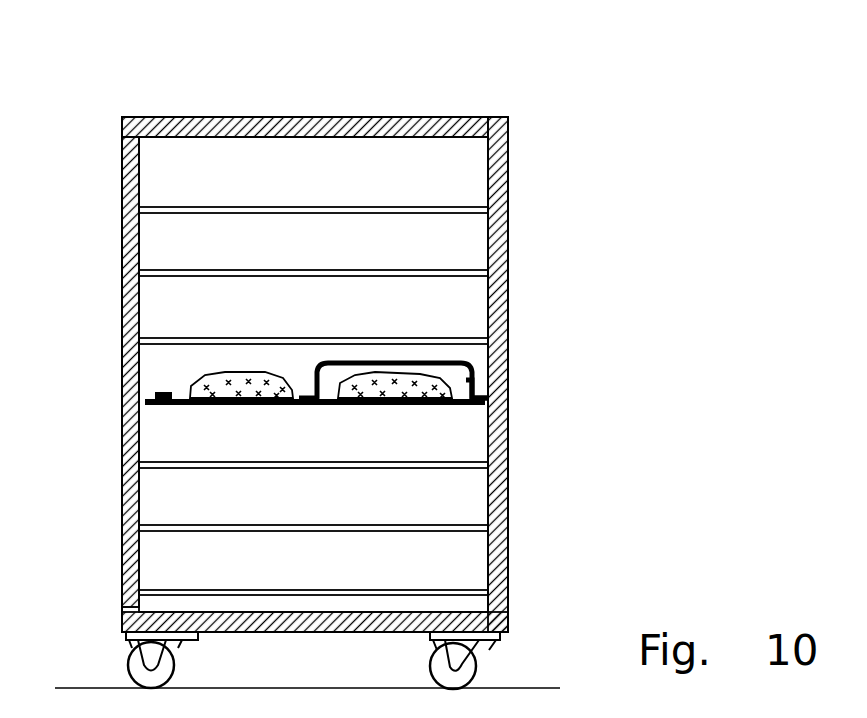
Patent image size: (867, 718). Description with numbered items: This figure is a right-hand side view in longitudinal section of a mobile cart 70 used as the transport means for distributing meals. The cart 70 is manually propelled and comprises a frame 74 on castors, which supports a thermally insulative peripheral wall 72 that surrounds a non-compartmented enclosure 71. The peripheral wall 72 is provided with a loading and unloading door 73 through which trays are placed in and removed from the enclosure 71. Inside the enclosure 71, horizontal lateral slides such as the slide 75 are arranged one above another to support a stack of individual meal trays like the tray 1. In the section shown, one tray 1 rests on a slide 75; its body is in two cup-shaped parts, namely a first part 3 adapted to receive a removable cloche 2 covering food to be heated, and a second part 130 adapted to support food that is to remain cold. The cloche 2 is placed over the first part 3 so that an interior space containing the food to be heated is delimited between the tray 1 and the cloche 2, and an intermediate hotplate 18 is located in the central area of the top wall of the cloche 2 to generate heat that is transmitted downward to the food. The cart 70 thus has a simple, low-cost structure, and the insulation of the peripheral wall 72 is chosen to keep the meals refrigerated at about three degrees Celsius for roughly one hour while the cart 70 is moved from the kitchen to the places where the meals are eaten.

The cart 70 is at (110, 193).
The enclosure 71 is at (402, 160).
The thermally insulative peripheral wall 72 is at (508, 167).
The loading and unloading door 73 is at (127, 330).
The slide 75 is at (435, 270).
The frame 74 is at (472, 666).
The tray 1 is at (460, 407).
The cloche 2 is at (472, 382).
The hotplate 18 is at (397, 362).
The first part 3 is at (384, 408).
The second part 130 is at (199, 410).